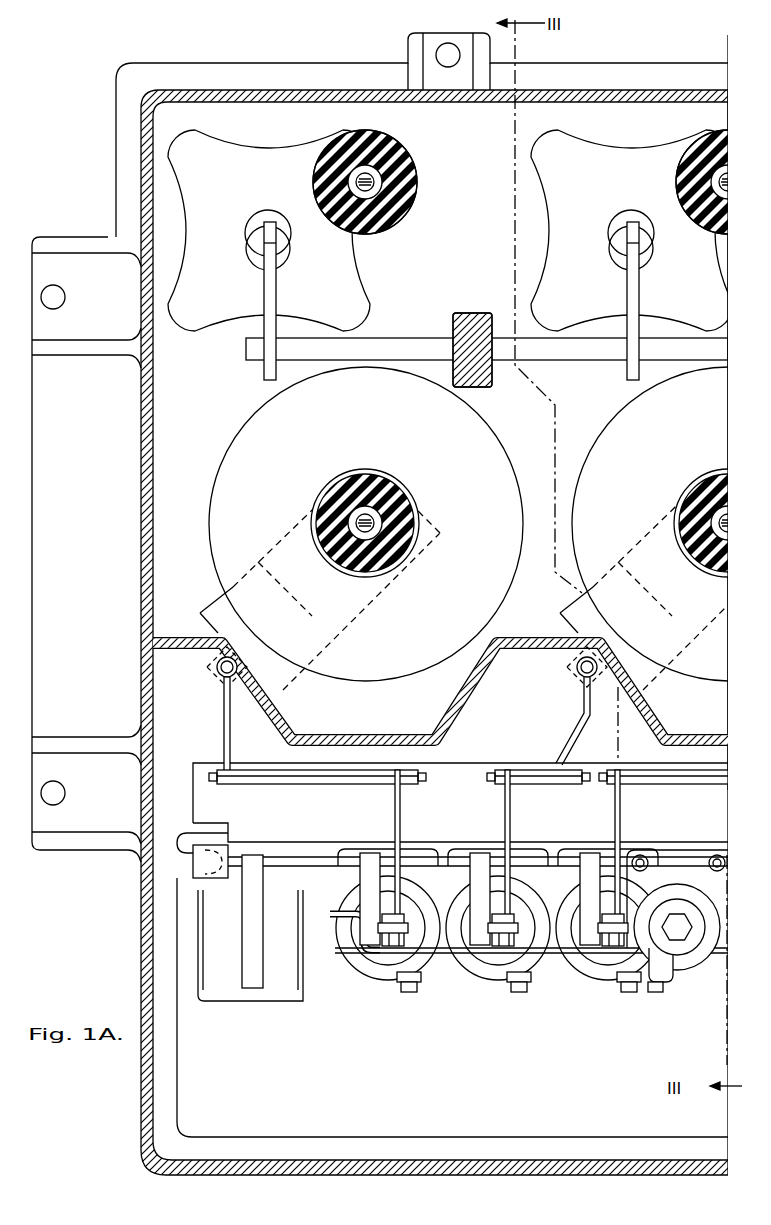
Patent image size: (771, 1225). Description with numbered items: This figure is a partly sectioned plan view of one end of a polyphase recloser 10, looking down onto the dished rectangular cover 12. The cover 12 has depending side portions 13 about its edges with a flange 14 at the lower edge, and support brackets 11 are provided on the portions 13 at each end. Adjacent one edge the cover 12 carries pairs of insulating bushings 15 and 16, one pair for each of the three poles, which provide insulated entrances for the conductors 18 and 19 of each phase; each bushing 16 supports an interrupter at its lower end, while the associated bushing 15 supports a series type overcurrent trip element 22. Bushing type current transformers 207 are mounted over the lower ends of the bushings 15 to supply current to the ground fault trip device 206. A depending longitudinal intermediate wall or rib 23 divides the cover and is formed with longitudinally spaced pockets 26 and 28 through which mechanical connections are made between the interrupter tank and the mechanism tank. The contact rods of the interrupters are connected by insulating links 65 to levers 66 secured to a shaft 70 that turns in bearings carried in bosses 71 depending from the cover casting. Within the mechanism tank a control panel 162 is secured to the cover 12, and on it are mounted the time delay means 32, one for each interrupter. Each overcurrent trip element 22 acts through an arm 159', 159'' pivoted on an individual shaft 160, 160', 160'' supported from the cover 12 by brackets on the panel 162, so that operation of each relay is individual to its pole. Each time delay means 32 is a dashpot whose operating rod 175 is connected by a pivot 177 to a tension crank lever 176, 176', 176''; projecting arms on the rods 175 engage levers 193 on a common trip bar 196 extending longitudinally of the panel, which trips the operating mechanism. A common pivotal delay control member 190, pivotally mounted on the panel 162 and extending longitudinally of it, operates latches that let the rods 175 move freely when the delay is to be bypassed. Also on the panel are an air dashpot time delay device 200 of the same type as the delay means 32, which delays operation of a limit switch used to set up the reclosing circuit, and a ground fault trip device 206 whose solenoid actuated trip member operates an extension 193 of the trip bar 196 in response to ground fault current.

The polyphase recloser 10 is at (82, 129).
The support brackets 11 is at (33, 501).
The dished rectangular cover 12 is at (128, 930).
The depending side portions 13 is at (140, 478).
The flange 14 is at (116, 175).
The insulating bushing 15 is at (412, 497).
The insulating bushing 16 is at (409, 169).
The conductor 18 is at (357, 505).
The conductor 19 is at (377, 182).
The series type overcurrent trip element 22 is at (203, 592).
The intermediate wall or rib 23 is at (716, 735).
The pocket 26 is at (196, 651).
The pocket 28 is at (539, 652).
The time delay means 32 is at (552, 1030).
The insulating link 65 is at (289, 262).
The lever 66 is at (264, 374).
The shaft 70 is at (537, 362).
The boss 71 is at (492, 388).
The arm 159' is at (560, 721).
The arm 159'' is at (249, 724).
The shaft 160 is at (663, 789).
The shaft 160' is at (538, 788).
The shaft 160'' is at (317, 790).
The control panel 162 is at (193, 867).
The operating rod 175 is at (611, 918).
The tension crank lever 176 is at (636, 842).
The tension crank lever 176' is at (518, 858).
The tension crank lever 176'' is at (411, 858).
The pivot 177 is at (597, 928).
The delay control member 190 is at (445, 960).
The lever 193 is at (360, 888).
The common trip bar 196 is at (293, 856).
The air dashpot time delay device 200 is at (693, 877).
The ground fault trip device 206 is at (296, 1001).
The bushing type current transformer 207 is at (238, 448).